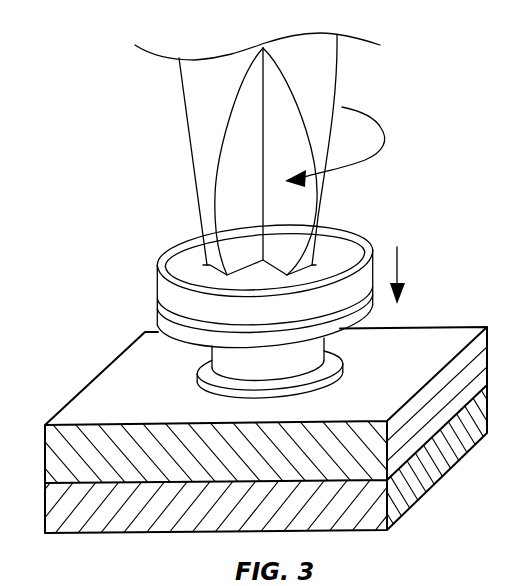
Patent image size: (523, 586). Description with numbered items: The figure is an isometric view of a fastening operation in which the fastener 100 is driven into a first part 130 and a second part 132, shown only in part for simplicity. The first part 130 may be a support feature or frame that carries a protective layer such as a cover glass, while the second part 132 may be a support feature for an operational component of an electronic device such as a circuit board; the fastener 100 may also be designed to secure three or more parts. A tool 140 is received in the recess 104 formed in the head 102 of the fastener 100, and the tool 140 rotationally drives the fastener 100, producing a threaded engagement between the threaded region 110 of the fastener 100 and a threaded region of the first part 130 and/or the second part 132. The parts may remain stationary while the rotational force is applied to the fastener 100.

The fastener 100 is at (100, 244).
The head 102 is at (374, 270).
The recess 104 is at (366, 217).
The threaded region 110 is at (152, 363).
The first part 130 is at (257, 443).
The second part 132 is at (261, 455).
The tool 140 is at (337, 93).